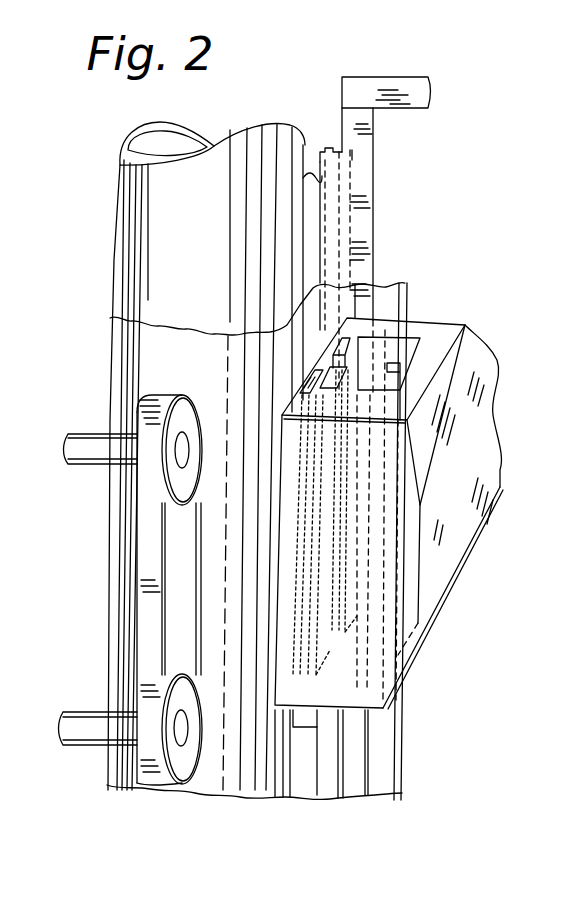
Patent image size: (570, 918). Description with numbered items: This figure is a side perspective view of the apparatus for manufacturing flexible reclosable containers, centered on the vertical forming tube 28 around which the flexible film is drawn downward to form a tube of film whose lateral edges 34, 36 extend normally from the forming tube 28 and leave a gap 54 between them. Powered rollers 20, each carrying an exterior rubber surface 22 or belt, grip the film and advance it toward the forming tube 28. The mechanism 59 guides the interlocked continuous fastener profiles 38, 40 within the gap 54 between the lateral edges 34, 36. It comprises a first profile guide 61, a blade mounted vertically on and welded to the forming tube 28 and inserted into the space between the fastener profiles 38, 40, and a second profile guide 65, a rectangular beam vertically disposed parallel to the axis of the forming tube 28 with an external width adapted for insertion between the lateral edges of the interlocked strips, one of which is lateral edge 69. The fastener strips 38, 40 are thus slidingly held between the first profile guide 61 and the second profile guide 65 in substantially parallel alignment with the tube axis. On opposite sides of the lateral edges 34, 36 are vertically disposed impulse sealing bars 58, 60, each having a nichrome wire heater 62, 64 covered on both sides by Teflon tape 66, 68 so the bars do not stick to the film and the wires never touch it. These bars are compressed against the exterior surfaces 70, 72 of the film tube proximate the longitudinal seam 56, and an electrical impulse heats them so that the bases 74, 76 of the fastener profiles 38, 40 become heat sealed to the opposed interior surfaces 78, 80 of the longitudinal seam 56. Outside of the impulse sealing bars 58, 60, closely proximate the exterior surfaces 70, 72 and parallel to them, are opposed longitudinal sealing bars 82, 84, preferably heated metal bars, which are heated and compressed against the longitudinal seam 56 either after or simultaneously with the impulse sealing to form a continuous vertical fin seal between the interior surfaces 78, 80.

The powered rollers 20 is at (182, 408).
The exterior rubber surface 22 is at (145, 408).
The forming tube 28 is at (152, 192).
The lateral edge 34 is at (408, 287).
The lateral edge 36 is at (410, 280).
The continuous fastener profile 38 is at (332, 172).
The continuous fastener profile 40 is at (337, 152).
The gap 54 is at (388, 276).
The longitudinal seam 56 is at (327, 822).
The impulse sealing bar 58 is at (305, 345).
The mechanism for guiding fastener profiles 59 is at (310, 105).
The impulse sealing bar 60 is at (342, 293).
The first profile guide 61 is at (312, 266).
The nichrome wire heater 62 is at (300, 422).
The nichrome wire heater 64 is at (433, 340).
The second profile guide 65 is at (397, 97).
The Teflon tape 66 is at (405, 380).
The Teflon tape 68 is at (345, 312).
The lateral edge of fastener profile strip 69 is at (345, 155).
The exterior surface 70 is at (382, 775).
The exterior surface 72 is at (383, 737).
The base of fastener profile 74 is at (335, 272).
The base of fastener profile 76 is at (332, 189).
The interior surface 78 is at (392, 302).
The interior surface 80 is at (425, 255).
The longitudinal sealing bar 82 is at (385, 374).
The longitudinal sealing bar 84 is at (396, 372).